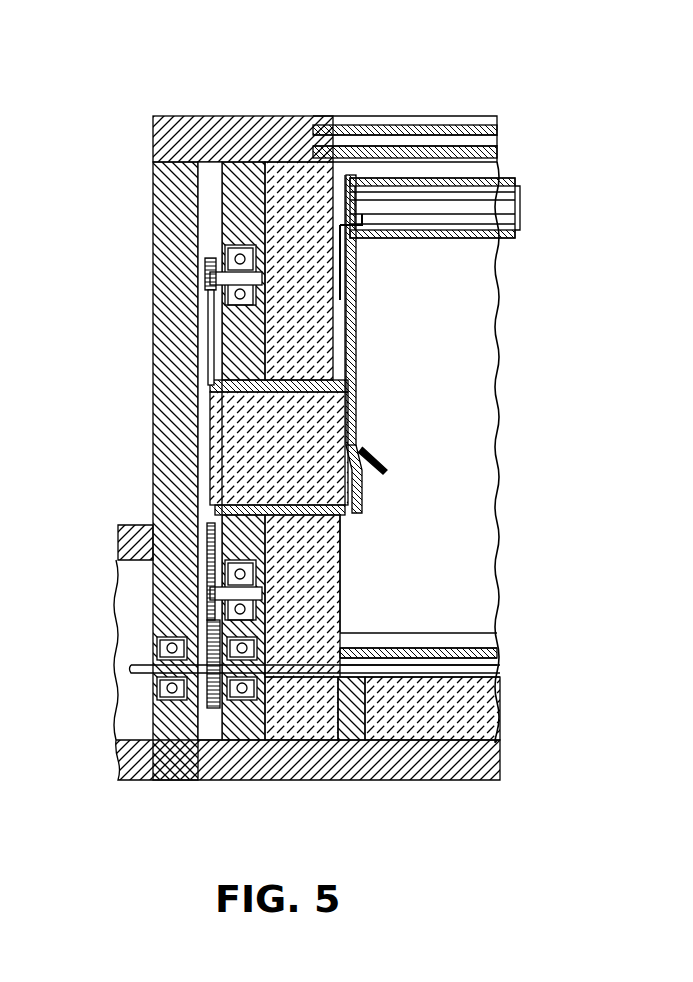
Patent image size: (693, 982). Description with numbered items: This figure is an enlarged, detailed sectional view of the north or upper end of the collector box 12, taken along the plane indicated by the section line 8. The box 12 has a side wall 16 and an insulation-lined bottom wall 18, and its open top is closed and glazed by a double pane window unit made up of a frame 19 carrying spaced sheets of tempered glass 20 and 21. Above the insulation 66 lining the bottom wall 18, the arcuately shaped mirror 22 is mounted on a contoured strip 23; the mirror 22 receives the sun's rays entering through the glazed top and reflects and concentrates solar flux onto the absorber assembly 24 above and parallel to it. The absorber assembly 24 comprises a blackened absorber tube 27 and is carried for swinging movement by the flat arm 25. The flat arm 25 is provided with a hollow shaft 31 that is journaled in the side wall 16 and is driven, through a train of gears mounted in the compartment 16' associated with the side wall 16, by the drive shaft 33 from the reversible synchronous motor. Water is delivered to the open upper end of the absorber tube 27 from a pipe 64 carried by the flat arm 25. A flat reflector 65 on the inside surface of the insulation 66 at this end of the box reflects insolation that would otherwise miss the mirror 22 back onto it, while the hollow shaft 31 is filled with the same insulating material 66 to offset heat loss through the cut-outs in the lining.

The section line 8 is at (238, 85).
The collector box 12 is at (131, 154).
The side wall 16 is at (243, 430).
The compartment 16' is at (162, 451).
The bottom wall 18 is at (452, 782).
The frame 19 is at (290, 122).
The sheet of tempered glass 20 is at (486, 124).
The sheet of tempered glass 21 is at (495, 158).
The arcuately shaped mirror 22 is at (472, 640).
The contoured strip 23 is at (350, 742).
The absorber assembly 24 is at (484, 254).
The flat arm 25 is at (358, 292).
The absorber tube 27 is at (520, 208).
The hollow shaft 31 is at (355, 490).
The drive shaft 33 is at (130, 666).
The pipe 64 is at (362, 215).
The flat reflector 65 is at (352, 587).
The insulation 66 is at (330, 425).